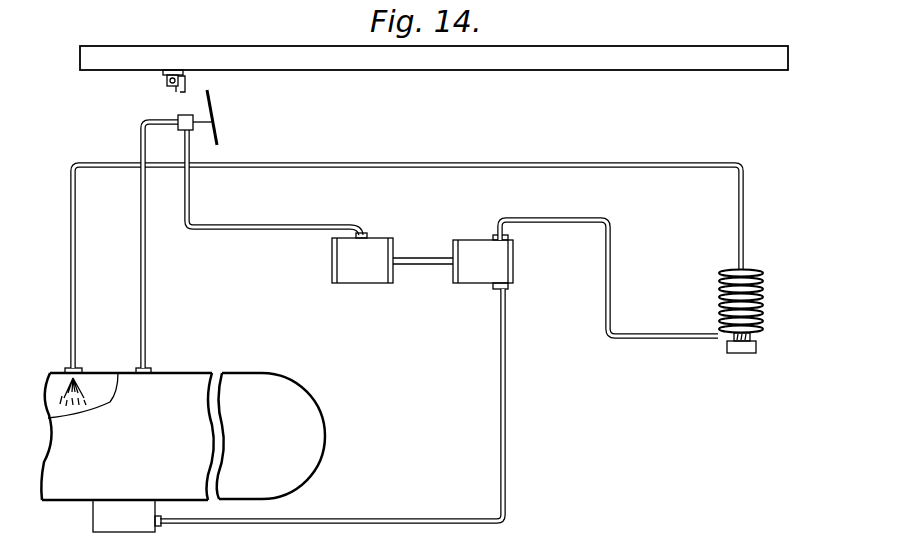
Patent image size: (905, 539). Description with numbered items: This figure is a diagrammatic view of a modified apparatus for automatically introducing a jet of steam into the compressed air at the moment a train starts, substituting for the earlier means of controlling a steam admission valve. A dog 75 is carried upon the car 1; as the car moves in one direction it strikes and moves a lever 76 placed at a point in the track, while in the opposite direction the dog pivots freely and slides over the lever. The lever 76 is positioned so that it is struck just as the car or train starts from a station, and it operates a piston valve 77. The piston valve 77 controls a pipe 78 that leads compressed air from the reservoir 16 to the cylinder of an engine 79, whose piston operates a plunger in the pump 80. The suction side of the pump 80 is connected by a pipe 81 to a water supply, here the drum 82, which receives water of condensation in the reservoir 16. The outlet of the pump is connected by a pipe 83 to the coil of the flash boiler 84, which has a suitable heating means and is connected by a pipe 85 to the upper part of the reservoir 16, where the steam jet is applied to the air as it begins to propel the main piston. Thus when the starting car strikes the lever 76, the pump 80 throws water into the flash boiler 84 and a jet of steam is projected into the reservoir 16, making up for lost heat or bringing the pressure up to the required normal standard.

The car 1 is at (574, 46).
The reservoir 16 is at (183, 434).
The dog 75 is at (186, 84).
The lever 76 is at (214, 106).
The piston valve 77 is at (195, 130).
The pipe 78 is at (150, 210).
The engine 79 is at (380, 283).
The pump 80 is at (514, 262).
The pipe 81 is at (508, 394).
The drum 82 is at (93, 518).
The pipe 83 is at (609, 278).
The flash boiler 84 is at (766, 304).
The pipe 85 is at (560, 164).